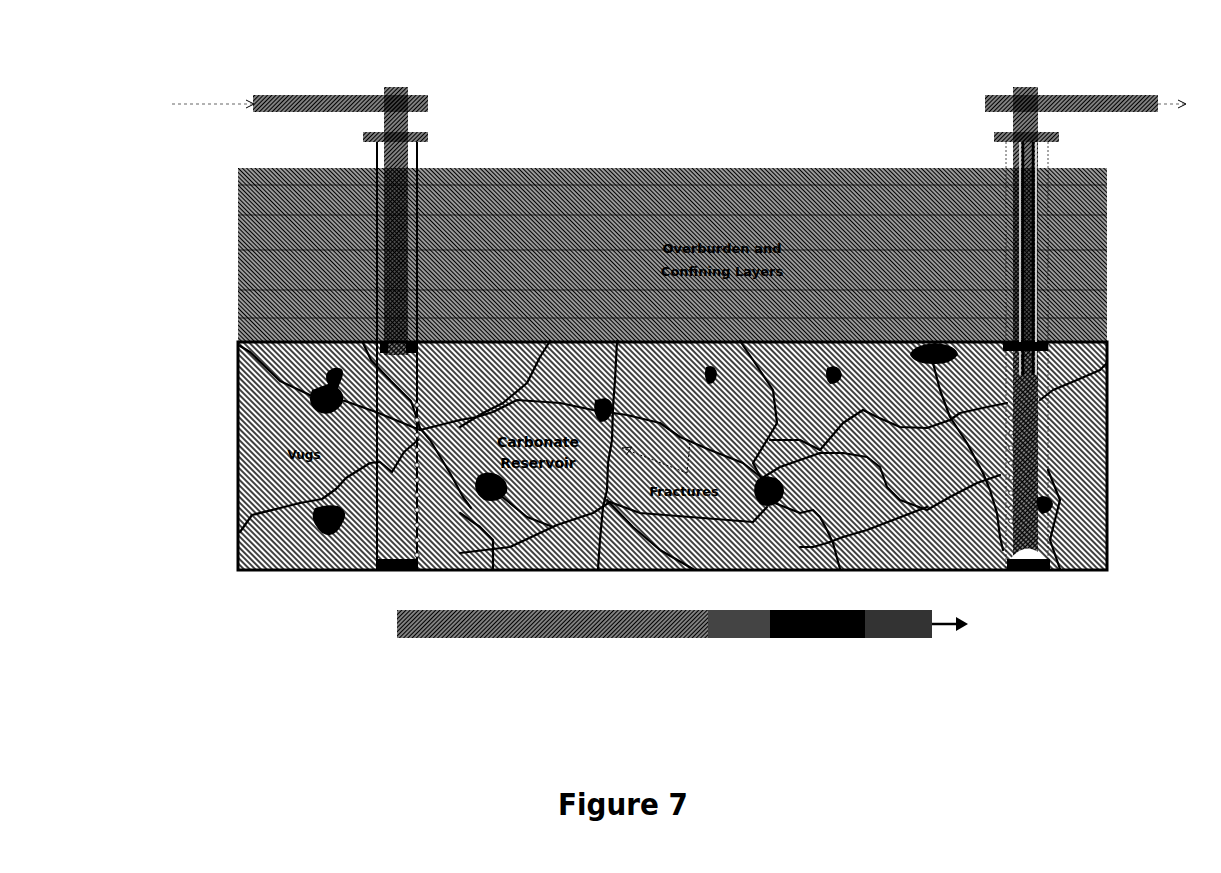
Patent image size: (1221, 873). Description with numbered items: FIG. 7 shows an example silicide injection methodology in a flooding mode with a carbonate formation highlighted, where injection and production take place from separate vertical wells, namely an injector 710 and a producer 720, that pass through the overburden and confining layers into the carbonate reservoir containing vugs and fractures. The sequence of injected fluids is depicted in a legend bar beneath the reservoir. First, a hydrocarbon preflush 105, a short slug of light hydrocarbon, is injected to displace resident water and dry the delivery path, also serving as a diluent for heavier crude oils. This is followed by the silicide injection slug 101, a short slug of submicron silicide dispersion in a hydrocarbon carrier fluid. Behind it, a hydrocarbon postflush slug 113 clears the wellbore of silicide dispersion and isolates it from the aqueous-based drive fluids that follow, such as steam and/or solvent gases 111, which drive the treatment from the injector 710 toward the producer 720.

The injector well 710 is at (444, 105).
The producer well 720 is at (1090, 83).
The steam and/or solvent gases 111 is at (552, 642).
The postflush slug 113 is at (739, 642).
The silicide injection slug 101 is at (817, 642).
The hydrocarbon preflush 105 is at (898, 640).